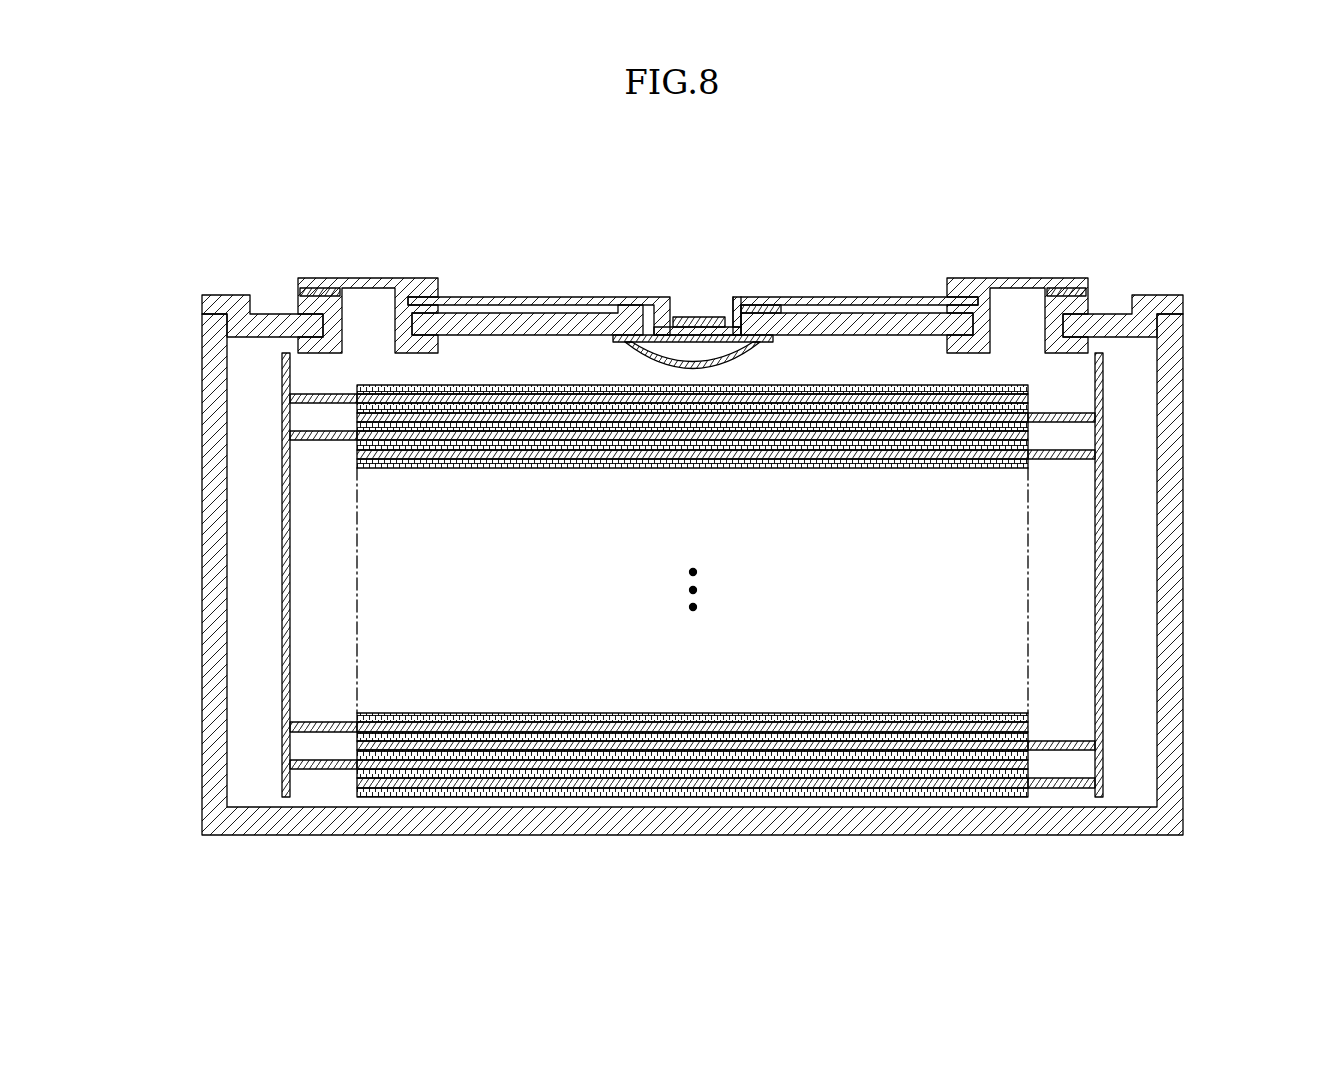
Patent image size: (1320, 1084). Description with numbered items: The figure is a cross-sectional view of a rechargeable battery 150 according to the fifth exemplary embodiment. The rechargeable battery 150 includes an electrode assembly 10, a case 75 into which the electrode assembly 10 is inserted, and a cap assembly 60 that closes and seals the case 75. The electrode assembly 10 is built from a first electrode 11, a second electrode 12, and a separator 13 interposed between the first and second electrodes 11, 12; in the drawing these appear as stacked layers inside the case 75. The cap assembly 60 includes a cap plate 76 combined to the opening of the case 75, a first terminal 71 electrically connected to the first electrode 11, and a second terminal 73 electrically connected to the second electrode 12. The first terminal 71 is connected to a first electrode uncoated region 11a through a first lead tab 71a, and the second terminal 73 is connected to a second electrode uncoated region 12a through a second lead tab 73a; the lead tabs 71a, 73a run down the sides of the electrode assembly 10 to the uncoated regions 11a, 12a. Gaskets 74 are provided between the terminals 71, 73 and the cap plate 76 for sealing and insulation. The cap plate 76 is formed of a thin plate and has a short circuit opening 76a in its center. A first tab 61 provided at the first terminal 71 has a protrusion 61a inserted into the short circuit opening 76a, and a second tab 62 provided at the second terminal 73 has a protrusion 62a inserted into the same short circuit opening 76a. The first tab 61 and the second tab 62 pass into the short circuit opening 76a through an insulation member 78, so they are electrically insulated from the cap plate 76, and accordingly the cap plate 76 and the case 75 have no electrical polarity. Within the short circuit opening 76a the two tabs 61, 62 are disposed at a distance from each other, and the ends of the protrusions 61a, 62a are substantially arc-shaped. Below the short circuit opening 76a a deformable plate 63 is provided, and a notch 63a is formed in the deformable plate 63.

The rechargeable battery 150 is at (803, 153).
The electrode assembly 10 is at (692, 639).
The first electrode 11 is at (447, 766).
The first electrode uncoated region 11a is at (312, 790).
The second electrode 12 is at (930, 783).
The second electrode uncoated region 12a is at (1068, 789).
The separator 13 is at (655, 786).
The cap assembly 60 is at (693, 279).
The first tab 61 is at (543, 297).
The protrusion 61a is at (668, 300).
The second tab 62 is at (900, 297).
The protrusion 62a is at (718, 305).
The deformable plate 63 is at (608, 338).
The notch 63a is at (690, 367).
The first terminal 71 is at (375, 278).
The first lead tab 71a is at (282, 578).
The second terminal 73 is at (1000, 278).
The second lead tab 73a is at (1103, 593).
The gaskets 74 is at (298, 293).
The case 75 is at (1183, 455).
The cap plate 76 is at (1160, 295).
The short circuit opening 76a is at (790, 330).
The insulation member 78 is at (727, 322).